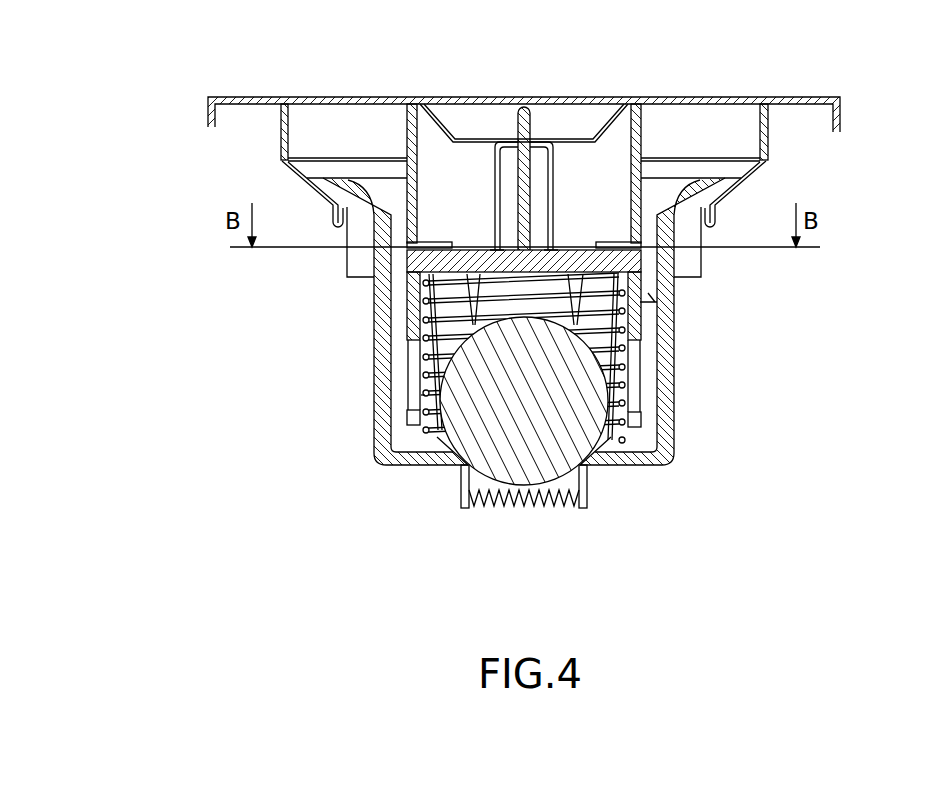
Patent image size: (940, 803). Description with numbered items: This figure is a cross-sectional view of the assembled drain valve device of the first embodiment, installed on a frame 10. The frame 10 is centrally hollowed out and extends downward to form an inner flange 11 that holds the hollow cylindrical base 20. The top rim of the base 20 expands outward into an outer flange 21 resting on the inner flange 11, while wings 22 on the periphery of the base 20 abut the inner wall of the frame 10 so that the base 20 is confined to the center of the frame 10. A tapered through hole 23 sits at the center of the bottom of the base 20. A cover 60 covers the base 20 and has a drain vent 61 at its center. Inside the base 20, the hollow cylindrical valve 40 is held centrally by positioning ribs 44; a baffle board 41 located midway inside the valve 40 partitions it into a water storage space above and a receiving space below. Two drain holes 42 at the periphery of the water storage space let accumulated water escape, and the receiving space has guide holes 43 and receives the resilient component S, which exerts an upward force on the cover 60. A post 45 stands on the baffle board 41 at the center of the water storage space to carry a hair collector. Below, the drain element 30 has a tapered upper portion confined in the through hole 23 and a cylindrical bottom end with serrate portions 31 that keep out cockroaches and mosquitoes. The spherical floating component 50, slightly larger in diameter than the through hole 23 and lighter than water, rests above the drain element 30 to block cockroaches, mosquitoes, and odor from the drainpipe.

The frame 10 is at (818, 98).
The inner flange 11 is at (290, 180).
The base 20 is at (376, 383).
The outer flange 21 is at (720, 198).
The wings 22 is at (695, 267).
The tapered through hole 23 is at (601, 465).
The drain element 30 is at (586, 487).
The serrate portions 31 is at (561, 505).
The valve 40 is at (670, 280).
The baffle board 41 is at (447, 263).
The drain hole 42 is at (392, 251).
The guide holes 43 is at (632, 377).
The positioning ribs 44 is at (637, 265).
The post 45 is at (528, 106).
The floating component 50 is at (470, 443).
The cover 60 is at (700, 98).
The drain vent 61 is at (573, 142).
The resilient component S is at (423, 395).